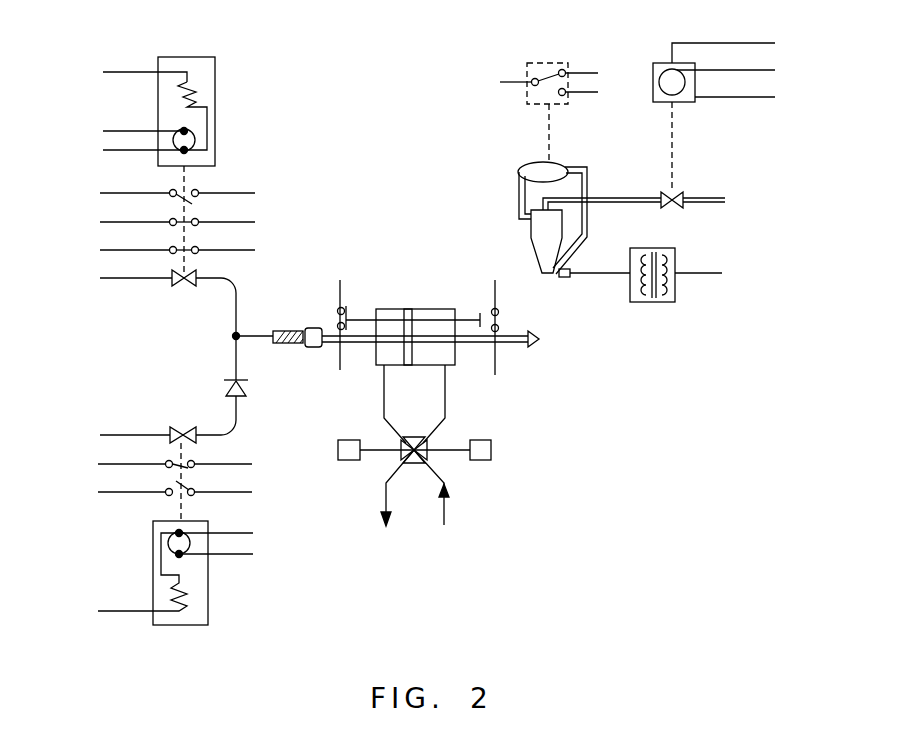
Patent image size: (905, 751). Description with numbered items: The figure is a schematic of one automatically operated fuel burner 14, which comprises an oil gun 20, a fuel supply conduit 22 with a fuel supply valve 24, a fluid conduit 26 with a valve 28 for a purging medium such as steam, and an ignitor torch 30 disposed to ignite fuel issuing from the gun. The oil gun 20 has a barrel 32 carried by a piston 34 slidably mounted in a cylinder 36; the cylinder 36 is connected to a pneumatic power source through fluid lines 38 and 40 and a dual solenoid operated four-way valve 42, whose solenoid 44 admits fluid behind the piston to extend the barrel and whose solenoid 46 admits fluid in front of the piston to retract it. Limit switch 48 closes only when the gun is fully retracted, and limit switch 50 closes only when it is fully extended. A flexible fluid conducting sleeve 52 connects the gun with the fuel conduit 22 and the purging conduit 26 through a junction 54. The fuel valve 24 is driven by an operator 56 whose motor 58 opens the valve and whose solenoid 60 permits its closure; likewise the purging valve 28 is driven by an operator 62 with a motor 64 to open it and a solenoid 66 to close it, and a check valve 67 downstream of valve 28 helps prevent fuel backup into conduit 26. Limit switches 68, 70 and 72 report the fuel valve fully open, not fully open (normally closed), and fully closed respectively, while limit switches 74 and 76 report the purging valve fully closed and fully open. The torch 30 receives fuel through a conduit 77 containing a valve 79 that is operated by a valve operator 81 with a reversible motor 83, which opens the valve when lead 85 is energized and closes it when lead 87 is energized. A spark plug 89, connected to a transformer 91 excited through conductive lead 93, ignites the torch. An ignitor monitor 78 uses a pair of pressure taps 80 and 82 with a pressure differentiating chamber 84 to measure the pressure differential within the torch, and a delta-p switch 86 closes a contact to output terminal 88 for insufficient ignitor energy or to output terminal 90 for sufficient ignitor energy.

The fuel burner 14 is at (354, 98).
The oil gun 20 is at (440, 307).
The fuel supply conduit 22 is at (236, 306).
The fuel supply valve 24 is at (178, 286).
The fluid conduit 26 is at (237, 414).
The valve 28 is at (172, 428).
The ignitor torch 30 is at (532, 247).
The barrel 32 is at (512, 344).
The piston 34 is at (408, 309).
The cylinder 36 is at (384, 370).
The fluid line 38 is at (384, 405).
The fluid line 40 is at (446, 405).
The dual solenoid operated four-way valve 42 is at (442, 466).
The solenoid 44 is at (338, 448).
The solenoid 46 is at (491, 450).
The limit switch 48 is at (340, 316).
The limit switch 50 is at (498, 312).
The flexible fluid conducting sleeve 52 is at (299, 343).
The junction 54 is at (234, 336).
The operator 56 is at (215, 96).
The motor 58 is at (196, 133).
The solenoid 60 is at (192, 80).
The operator 62 is at (153, 585).
The motor 64 is at (183, 556).
The solenoid 66 is at (181, 607).
The check valve 67 is at (229, 390).
The limit switch 68 is at (198, 190).
The limit switch 70 is at (200, 220).
The limit switch 72 is at (199, 249).
The limit switch 74 is at (198, 464).
The limit switch 76 is at (198, 492).
The conduit 77 is at (606, 203).
The ignitor monitor 78 is at (555, 155).
The valve 79 is at (678, 203).
The pressure tap 80 is at (520, 196).
The valve operator 81 is at (681, 101).
The pressure tap 82 is at (589, 187).
The reversible motor 83 is at (669, 98).
The pressure differentiating chamber 84 is at (527, 146).
The lead 85 is at (730, 70).
The delta-p switch 86 is at (533, 103).
The lead 87 is at (728, 43).
The output terminal 88 is at (566, 72).
The spark plug 89 is at (562, 279).
The output terminal 90 is at (585, 92).
The transformer 91 is at (655, 302).
The conductive lead 93 is at (698, 272).